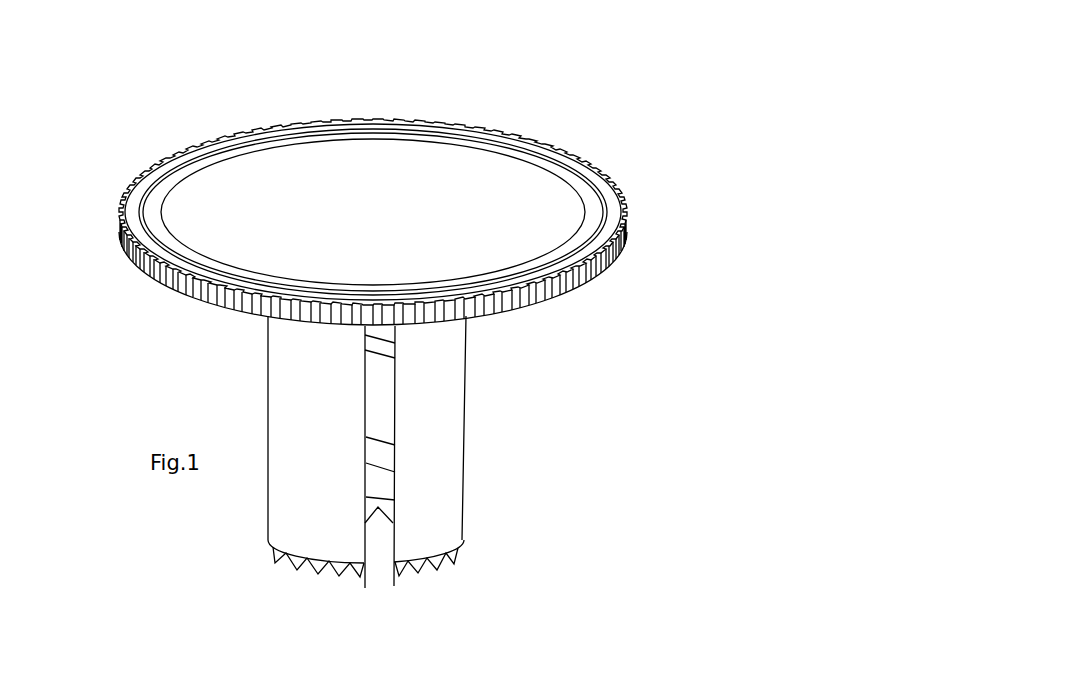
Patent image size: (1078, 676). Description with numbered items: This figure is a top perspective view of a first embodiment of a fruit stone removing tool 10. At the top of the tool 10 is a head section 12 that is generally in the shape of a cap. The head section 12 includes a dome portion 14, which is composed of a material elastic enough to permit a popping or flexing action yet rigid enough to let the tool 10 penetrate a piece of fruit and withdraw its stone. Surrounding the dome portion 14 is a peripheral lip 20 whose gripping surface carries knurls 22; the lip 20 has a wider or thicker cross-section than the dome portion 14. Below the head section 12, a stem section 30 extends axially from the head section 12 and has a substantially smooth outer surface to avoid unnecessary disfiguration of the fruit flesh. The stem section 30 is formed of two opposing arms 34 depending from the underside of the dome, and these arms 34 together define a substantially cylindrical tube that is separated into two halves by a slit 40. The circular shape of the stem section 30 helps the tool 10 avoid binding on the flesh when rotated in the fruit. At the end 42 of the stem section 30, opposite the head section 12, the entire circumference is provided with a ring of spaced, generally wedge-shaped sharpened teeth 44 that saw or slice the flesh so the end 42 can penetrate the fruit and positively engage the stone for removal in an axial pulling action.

The fruit stone removing tool 10 is at (617, 88).
The head section 12 is at (273, 112).
The dome portion 14 is at (467, 168).
The peripheral lip 20 is at (604, 237).
The knurls 22 is at (538, 295).
The stem section 30 is at (492, 421).
The opposing arms 34 is at (447, 508).
The slit 40 is at (378, 578).
The end of the stem section 42 is at (273, 548).
The sharpened teeth 44 is at (413, 573).